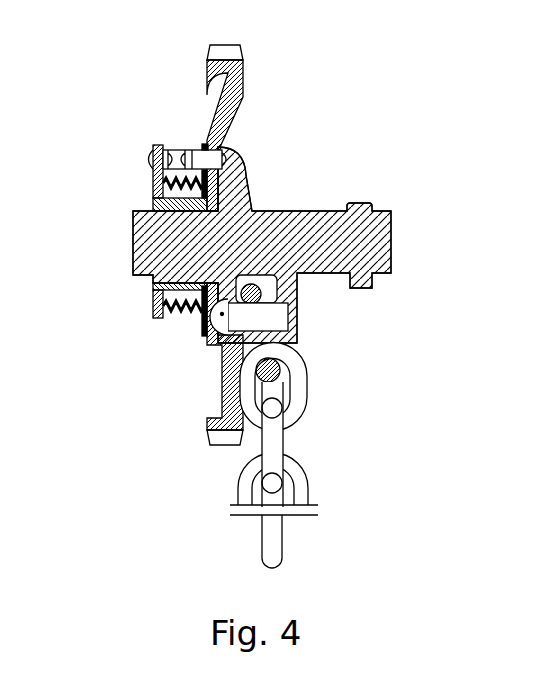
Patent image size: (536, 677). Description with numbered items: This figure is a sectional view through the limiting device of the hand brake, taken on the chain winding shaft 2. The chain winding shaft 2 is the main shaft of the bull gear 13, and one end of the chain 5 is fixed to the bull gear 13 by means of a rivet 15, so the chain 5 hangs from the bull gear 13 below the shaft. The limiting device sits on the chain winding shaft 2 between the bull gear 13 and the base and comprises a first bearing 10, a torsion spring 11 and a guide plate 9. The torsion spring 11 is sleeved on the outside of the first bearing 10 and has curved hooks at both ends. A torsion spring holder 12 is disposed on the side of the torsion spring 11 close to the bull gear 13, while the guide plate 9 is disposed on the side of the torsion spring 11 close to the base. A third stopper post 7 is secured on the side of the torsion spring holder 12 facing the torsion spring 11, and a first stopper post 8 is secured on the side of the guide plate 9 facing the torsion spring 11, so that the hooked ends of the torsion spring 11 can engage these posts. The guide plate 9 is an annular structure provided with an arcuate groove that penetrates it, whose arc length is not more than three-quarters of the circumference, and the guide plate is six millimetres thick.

The chain winding shaft 2 is at (282, 237).
The chain 5 is at (272, 430).
The third stopper post 7 is at (203, 146).
The first stopper post 8 is at (178, 152).
The guide plate 9 is at (155, 178).
The first bearing 10 is at (153, 205).
The torsion spring 11 is at (200, 315).
The torsion spring holder 12 is at (203, 333).
The bull gear 13 is at (207, 142).
The rivet 15 is at (270, 317).